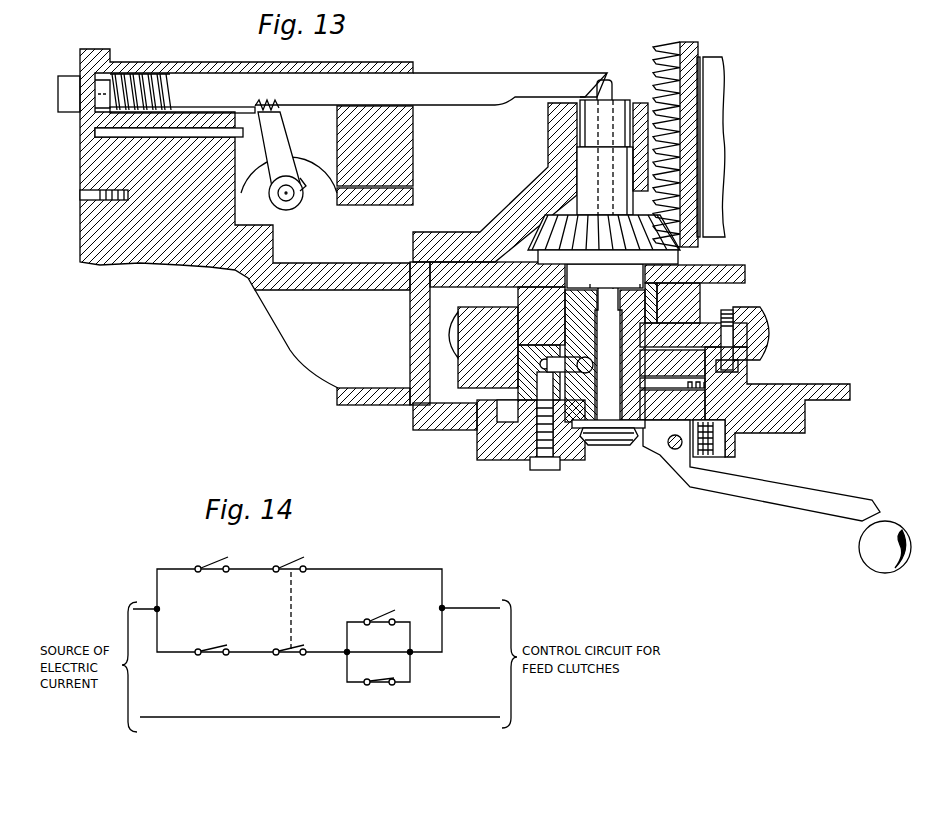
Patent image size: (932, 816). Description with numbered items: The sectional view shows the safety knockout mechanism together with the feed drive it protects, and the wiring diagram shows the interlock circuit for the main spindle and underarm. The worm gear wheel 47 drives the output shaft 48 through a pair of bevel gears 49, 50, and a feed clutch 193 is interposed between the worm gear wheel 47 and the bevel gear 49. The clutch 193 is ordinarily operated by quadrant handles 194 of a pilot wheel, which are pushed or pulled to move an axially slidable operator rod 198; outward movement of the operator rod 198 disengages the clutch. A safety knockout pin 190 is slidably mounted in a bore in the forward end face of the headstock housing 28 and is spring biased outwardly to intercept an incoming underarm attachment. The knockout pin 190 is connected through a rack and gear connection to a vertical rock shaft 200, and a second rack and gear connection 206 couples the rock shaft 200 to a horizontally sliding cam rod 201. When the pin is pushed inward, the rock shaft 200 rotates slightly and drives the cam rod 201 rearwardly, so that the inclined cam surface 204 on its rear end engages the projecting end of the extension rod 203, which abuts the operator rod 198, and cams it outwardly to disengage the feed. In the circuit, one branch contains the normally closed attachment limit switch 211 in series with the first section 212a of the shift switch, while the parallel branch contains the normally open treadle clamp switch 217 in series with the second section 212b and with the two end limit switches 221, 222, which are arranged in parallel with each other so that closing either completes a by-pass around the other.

In FIG. 13, the safety knockout pin 190 is at (58, 97).
In FIG. 13, the cam rod 201 is at (483, 78).
In FIG. 13, the inclined cam surface 204 is at (580, 90).
In FIG. 13, the rack and gear connection 206 is at (281, 109).
In FIG. 13, the vertical rock shaft 200 is at (292, 201).
In FIG. 13, the extension rod 203 is at (614, 92).
In FIG. 13, the bevel gear 50 is at (668, 63).
In FIG. 13, the output shaft 48 is at (705, 127).
In FIG. 13, the bevel gear 49 is at (604, 229).
In FIG. 13, the worm gear wheel 47 is at (768, 325).
In FIG. 13, the headstock housing 28 is at (353, 405).
In FIG. 13, the feed clutch 193 is at (511, 468).
In FIG. 13, the clutch operator rod 198 is at (611, 446).
In FIG. 13, the quadrant handle 194 is at (803, 501).
In FIG. 14, the limit switch 211 is at (214, 556).
In FIG. 14, the first section of shift control switch 212a is at (313, 553).
In FIG. 14, the second section of shift control switch 212b is at (295, 662).
In FIG. 14, the limit switch 217 is at (219, 660).
In FIG. 14, the end limit switch 221 is at (377, 607).
In FIG. 14, the end limit switch 222 is at (383, 688).